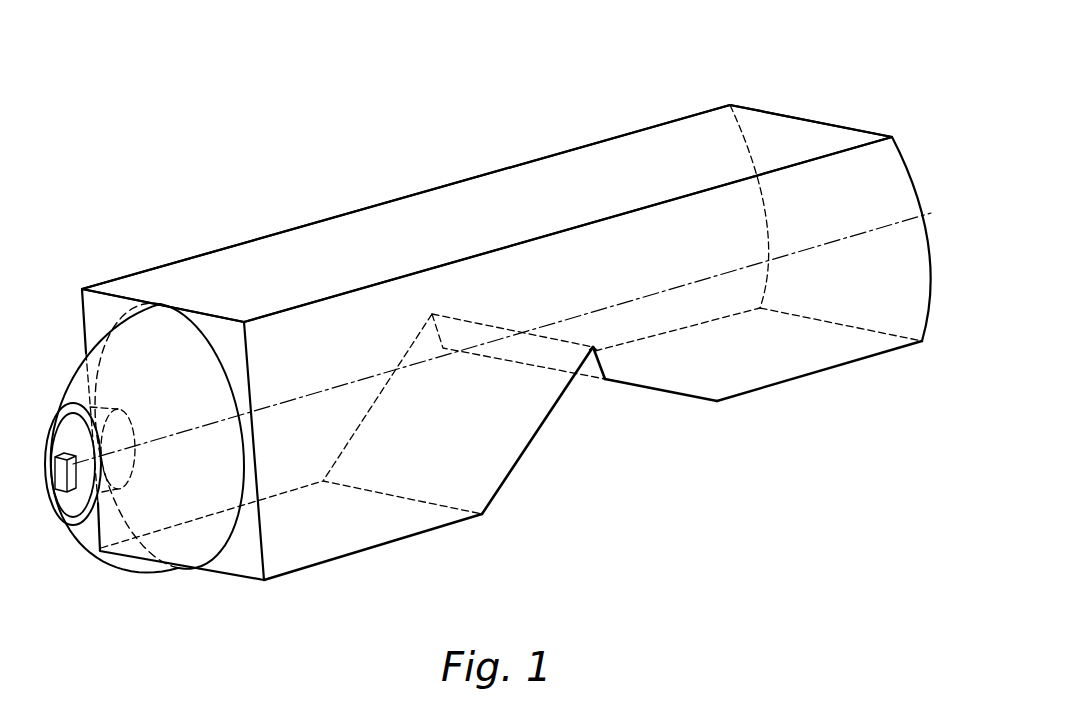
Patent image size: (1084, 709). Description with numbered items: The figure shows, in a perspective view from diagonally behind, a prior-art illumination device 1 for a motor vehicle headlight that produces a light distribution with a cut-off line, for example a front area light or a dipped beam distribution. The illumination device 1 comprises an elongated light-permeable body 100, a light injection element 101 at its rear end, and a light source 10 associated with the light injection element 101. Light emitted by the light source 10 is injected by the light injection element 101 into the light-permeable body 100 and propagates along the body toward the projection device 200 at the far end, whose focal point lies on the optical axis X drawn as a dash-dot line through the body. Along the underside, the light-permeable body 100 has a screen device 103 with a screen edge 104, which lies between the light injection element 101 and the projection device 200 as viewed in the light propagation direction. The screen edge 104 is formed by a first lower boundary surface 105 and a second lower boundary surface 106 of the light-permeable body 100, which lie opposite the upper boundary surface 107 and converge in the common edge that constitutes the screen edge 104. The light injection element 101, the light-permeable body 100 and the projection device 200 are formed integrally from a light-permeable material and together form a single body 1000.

The illumination device 1 is at (695, 83).
The light source 10 is at (48, 498).
The light-permeable body 100 is at (409, 217).
The light injection element 101 is at (143, 491).
The screen device 103 is at (470, 367).
The screen edge 104 is at (547, 333).
The first lower boundary surface 105 is at (572, 368).
The second lower boundary surface 106 is at (530, 422).
The upper boundary surface 107 is at (612, 164).
The projection device 200 is at (864, 188).
The body 1000 is at (167, 363).
The optical axis X is at (519, 331).